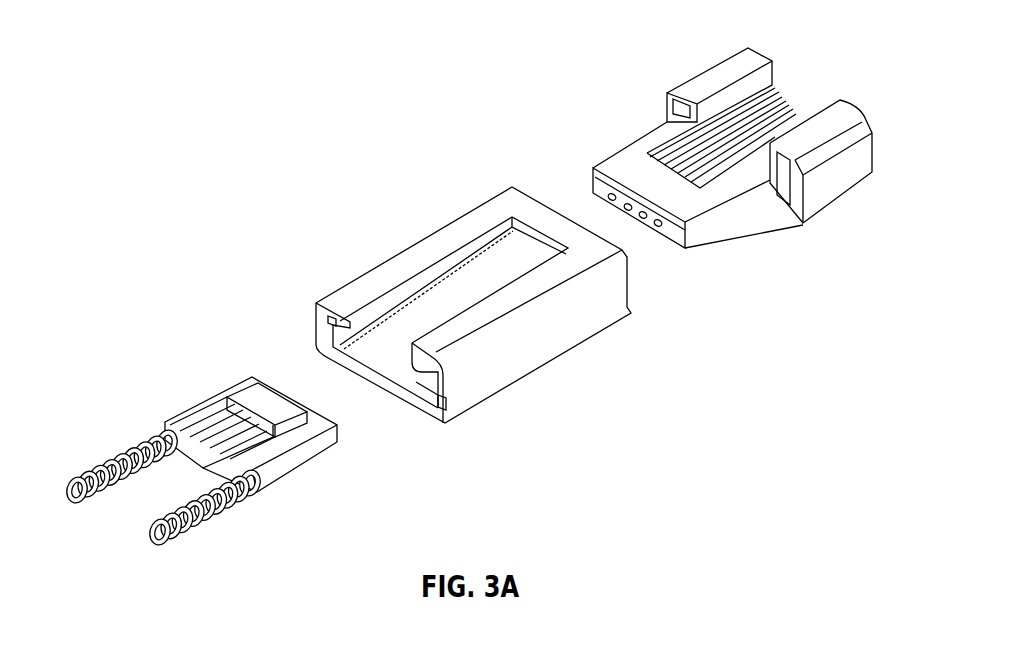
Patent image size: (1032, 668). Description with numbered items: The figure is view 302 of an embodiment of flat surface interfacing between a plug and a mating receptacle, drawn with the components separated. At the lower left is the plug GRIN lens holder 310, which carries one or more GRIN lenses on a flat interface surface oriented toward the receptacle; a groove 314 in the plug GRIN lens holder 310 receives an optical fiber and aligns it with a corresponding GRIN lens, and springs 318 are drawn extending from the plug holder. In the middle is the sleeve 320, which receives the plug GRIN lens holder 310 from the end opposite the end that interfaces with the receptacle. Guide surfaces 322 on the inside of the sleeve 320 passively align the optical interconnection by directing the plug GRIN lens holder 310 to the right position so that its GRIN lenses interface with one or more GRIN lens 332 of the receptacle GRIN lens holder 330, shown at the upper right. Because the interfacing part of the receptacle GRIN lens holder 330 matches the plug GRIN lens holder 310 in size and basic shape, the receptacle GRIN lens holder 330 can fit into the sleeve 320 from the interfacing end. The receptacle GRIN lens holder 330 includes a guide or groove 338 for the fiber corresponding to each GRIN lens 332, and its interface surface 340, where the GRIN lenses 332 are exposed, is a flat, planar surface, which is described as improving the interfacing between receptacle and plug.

The view 302 is at (138, 112).
The plug GRIN lens holder 310 is at (373, 398).
The groove 314 is at (200, 430).
The spring 318 is at (157, 517).
The sleeve 320 is at (520, 365).
The guide surfaces 322 is at (392, 347).
The receptacle GRIN lens holder 330 is at (600, 150).
The GRIN lens 332 is at (657, 137).
The groove 338 is at (747, 115).
The interface surface 340 is at (668, 230).